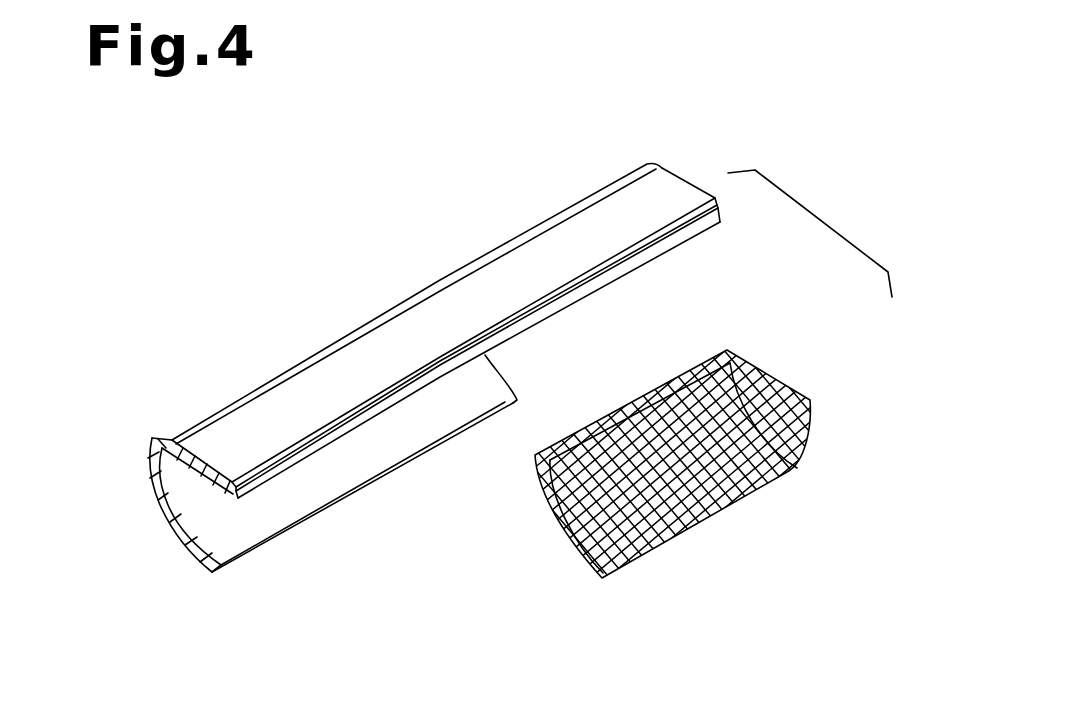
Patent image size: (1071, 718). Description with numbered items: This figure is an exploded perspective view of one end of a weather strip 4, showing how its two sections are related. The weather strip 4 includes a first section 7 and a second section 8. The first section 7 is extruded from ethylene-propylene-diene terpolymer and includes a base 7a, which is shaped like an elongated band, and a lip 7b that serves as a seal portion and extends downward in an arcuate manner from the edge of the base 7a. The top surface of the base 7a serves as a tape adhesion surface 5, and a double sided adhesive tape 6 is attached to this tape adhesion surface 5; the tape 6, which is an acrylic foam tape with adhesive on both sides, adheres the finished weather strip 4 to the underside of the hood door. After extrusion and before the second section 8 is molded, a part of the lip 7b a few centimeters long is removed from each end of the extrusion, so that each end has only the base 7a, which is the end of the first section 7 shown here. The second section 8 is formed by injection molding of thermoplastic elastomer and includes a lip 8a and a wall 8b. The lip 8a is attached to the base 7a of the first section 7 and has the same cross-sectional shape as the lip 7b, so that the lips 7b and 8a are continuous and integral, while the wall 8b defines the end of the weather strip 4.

The weather strip 4 is at (336, 309).
The tape adhesion surface 5 is at (259, 388).
The double sided adhesive tape 6 is at (593, 220).
The first section 7 is at (83, 420).
The base 7a is at (168, 438).
The lip 7b is at (152, 493).
The second section 8 is at (875, 425).
The lip 8a is at (790, 490).
The wall 8b is at (813, 427).